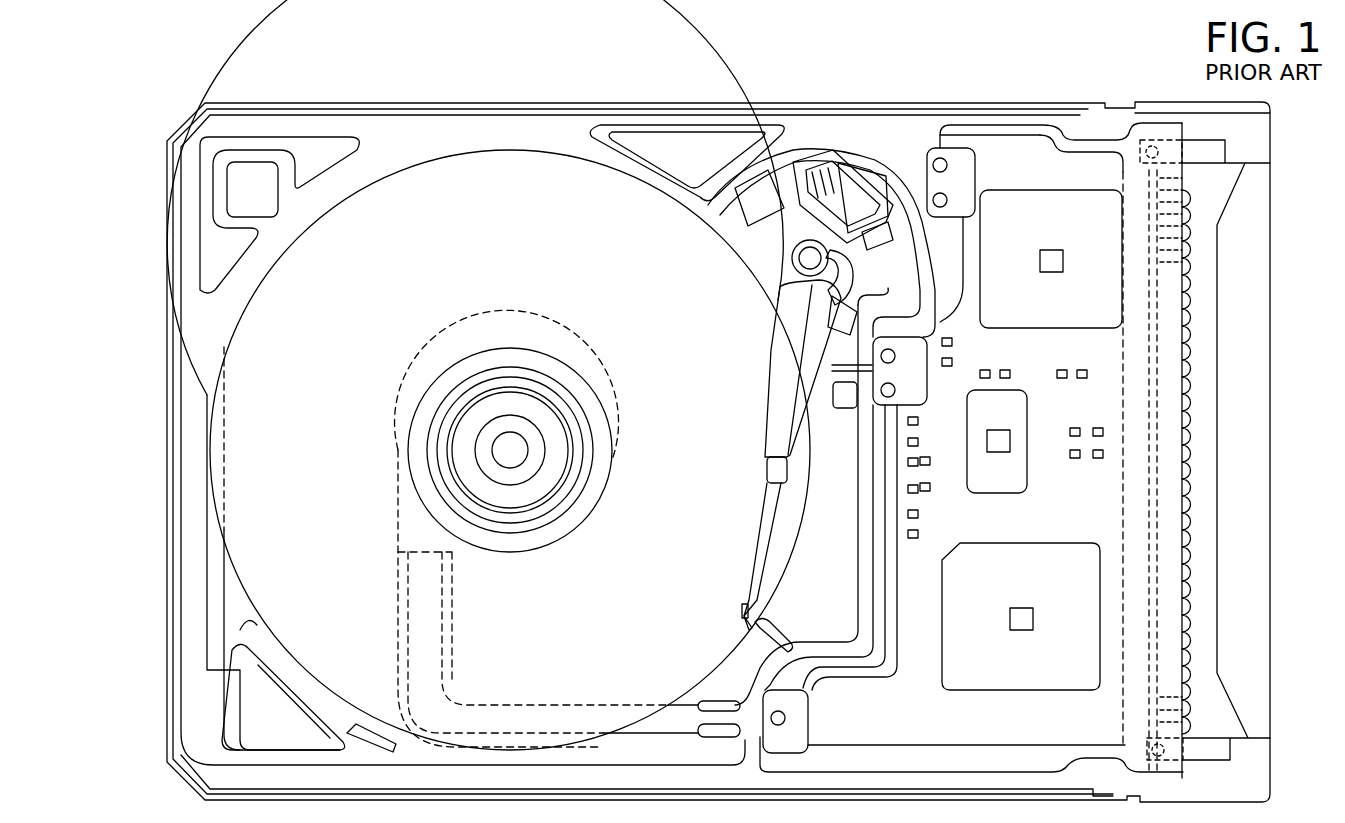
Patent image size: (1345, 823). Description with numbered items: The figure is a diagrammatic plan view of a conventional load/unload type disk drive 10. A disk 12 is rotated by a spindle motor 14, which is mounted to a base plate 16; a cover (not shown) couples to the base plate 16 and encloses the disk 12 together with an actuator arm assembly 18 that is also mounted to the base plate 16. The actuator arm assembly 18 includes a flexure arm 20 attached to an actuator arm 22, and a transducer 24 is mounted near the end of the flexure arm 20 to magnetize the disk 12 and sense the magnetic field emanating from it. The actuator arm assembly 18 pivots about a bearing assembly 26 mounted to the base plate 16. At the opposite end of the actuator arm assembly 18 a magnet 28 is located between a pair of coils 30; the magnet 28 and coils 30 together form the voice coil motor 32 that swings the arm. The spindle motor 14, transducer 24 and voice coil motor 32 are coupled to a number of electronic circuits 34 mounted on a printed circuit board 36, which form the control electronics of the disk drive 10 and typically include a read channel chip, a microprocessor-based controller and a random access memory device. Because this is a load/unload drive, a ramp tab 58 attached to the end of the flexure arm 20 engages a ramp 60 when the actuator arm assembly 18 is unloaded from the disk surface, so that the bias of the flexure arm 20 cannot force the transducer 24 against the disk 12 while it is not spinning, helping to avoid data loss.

The disk drive 10 is at (968, 88).
The disk 12 is at (570, 616).
The spindle motor 14 is at (443, 406).
The base plate 16 is at (392, 130).
The actuator arm assembly 18 is at (763, 465).
The flexure arm 20 is at (758, 532).
The actuator arm 22 is at (773, 430).
The transducer 24 is at (744, 616).
The bearing assembly 26 is at (770, 260).
The magnet 28 is at (837, 197).
The coils 30 is at (857, 182).
The voice coil motor 32 is at (778, 240).
The electronic circuits 34 is at (1066, 308).
The printed circuit board 36 is at (879, 722).
The ramp tab 58 is at (745, 623).
The ramp 60 is at (773, 632).